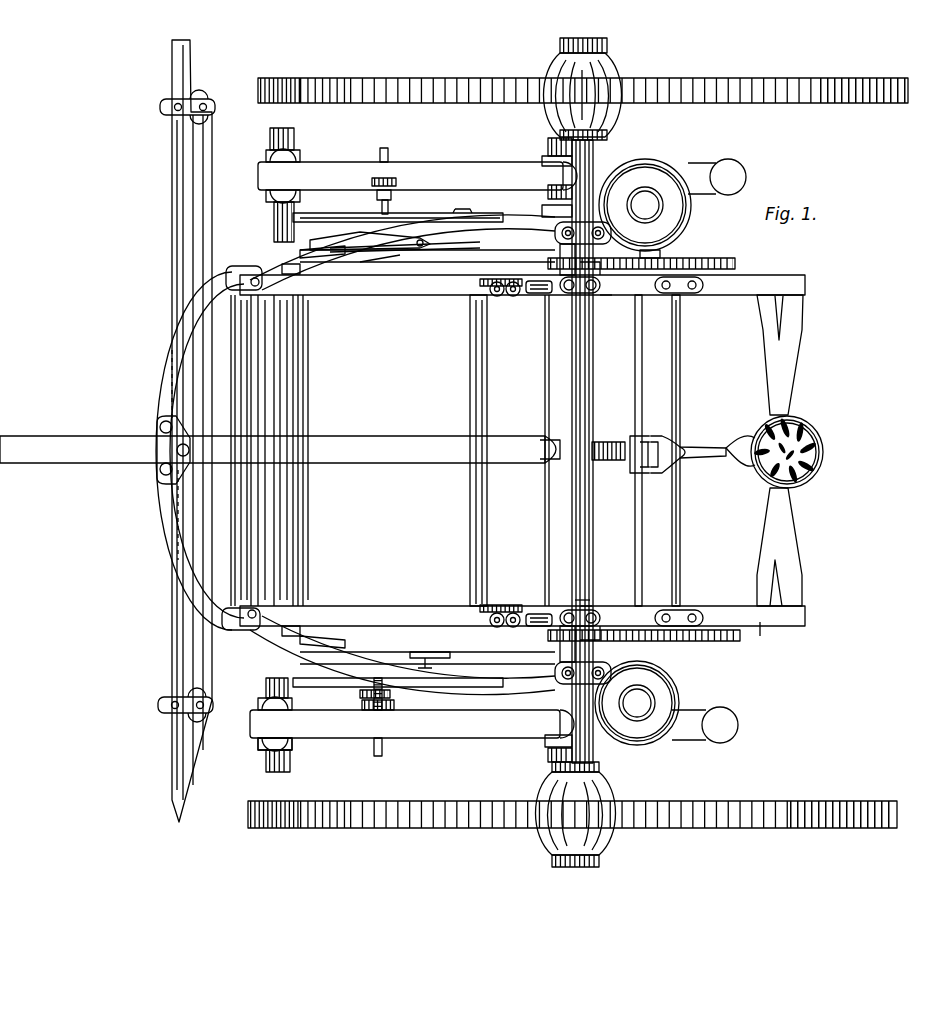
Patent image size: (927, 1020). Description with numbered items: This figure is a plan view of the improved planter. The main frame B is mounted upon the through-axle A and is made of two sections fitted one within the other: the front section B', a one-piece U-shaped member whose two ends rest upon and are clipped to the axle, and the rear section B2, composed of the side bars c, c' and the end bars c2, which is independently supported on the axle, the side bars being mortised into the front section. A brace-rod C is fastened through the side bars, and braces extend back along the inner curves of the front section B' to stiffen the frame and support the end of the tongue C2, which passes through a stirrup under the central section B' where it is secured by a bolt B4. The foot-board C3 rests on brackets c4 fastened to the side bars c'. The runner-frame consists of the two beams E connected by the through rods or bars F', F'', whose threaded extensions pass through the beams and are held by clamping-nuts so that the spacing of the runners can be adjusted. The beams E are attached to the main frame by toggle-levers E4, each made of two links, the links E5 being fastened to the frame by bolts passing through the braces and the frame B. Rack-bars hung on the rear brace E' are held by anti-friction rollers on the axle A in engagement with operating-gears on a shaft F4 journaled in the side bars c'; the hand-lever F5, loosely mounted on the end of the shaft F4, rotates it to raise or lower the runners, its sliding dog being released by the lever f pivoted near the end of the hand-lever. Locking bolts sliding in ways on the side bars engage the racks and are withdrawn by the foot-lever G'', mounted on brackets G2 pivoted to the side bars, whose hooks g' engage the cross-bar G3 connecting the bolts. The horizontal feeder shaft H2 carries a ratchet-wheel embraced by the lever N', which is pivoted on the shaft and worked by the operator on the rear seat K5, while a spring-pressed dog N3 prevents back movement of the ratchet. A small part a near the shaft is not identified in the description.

The through-axle A is at (585, 590).
The shaft collar a is at (585, 598).
The main frame B is at (522, 450).
The front section of main frame B' is at (338, 455).
The rear section of main frame B2 is at (687, 450).
The bolt B4 is at (177, 450).
The brace-rod C is at (427, 463).
The tongue C2 is at (280, 431).
The foot-board C3 is at (256, 357).
The side bar c is at (766, 640).
The side bar c' is at (780, 333).
The end bars c2 is at (792, 538).
The brackets c4 is at (272, 270).
The beams E is at (417, 176).
The rear brace E' is at (498, 462).
The toggle-levers E4 is at (450, 690).
The link of toggle-lever E5 is at (386, 698).
The through rods F' is at (314, 450).
The bar F'' is at (427, 229).
The shaft F4 is at (683, 338).
The hand-lever F5 is at (434, 262).
The lever f is at (370, 237).
The foot-lever G'' is at (461, 450).
The brackets G2 is at (532, 298).
The cross-bar G3 is at (543, 504).
The hooks g' is at (501, 453).
The horizontal shaft H2 is at (595, 508).
The seat K5 is at (824, 448).
The lever N' is at (678, 442).
The spring-pressed dog N3 is at (605, 443).